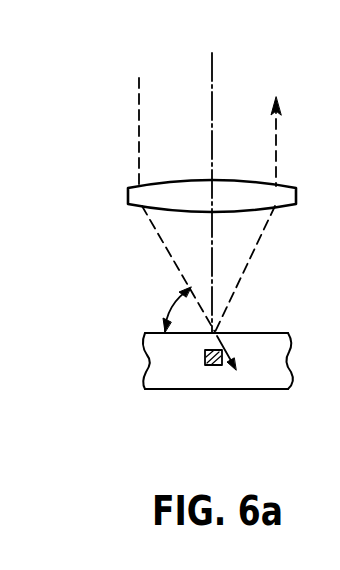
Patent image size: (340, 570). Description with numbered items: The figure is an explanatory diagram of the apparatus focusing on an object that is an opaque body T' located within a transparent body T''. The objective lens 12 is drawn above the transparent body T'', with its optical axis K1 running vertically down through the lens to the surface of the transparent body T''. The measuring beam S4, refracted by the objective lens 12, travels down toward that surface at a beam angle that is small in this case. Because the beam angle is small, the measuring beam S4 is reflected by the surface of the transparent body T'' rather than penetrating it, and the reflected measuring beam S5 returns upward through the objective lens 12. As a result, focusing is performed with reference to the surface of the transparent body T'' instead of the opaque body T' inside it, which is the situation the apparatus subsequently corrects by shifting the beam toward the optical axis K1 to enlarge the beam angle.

The optical axis K1 is at (212, 68).
The objective lens 12 is at (131, 190).
The measuring beam S4 is at (170, 253).
The measuring beam S5 is at (257, 252).
The transparent body T'' is at (185, 361).
The opaque body T' is at (220, 396).